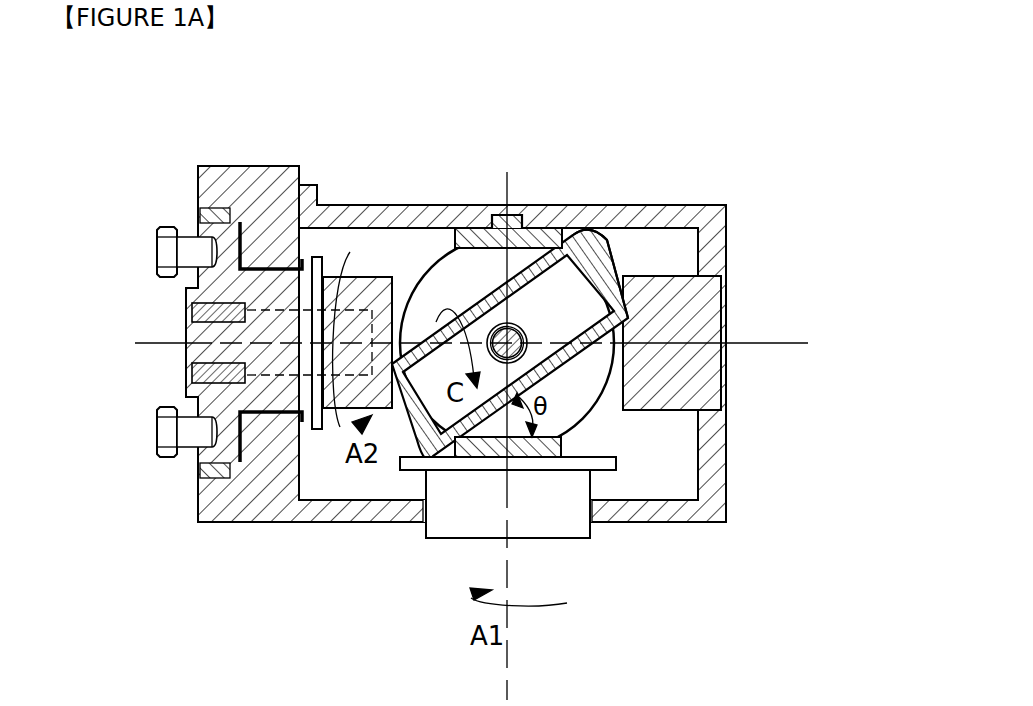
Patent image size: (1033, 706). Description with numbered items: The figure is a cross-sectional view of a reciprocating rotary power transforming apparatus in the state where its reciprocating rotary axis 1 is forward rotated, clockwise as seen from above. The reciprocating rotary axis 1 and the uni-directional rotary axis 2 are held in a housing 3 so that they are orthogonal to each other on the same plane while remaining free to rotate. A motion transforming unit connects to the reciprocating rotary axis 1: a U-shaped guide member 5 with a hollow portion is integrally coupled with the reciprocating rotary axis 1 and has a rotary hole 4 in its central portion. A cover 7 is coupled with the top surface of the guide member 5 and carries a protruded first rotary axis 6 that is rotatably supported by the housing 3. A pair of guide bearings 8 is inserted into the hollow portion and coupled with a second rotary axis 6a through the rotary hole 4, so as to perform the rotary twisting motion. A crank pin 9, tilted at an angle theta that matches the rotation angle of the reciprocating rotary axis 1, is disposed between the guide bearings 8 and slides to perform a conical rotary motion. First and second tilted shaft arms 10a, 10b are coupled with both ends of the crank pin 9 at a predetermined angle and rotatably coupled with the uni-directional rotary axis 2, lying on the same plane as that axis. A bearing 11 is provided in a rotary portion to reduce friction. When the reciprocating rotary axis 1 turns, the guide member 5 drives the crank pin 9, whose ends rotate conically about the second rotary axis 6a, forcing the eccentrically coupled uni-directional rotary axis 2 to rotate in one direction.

The reciprocating rotary axis 1 is at (580, 525).
The uni-directional rotary axis 2 is at (188, 335).
The housing 3 is at (724, 462).
The rotary hole 4 is at (528, 334).
The guide member 5 is at (577, 397).
The first rotary axis 6 is at (513, 210).
The second rotary axis 6a is at (500, 380).
The cover 7 is at (487, 228).
The guide bearings 8 is at (540, 252).
The crank pin 9 is at (575, 311).
The first tilted shaft arm 10a is at (432, 364).
The second tilted shaft arm 10b is at (601, 265).
The bearing 11 is at (415, 405).